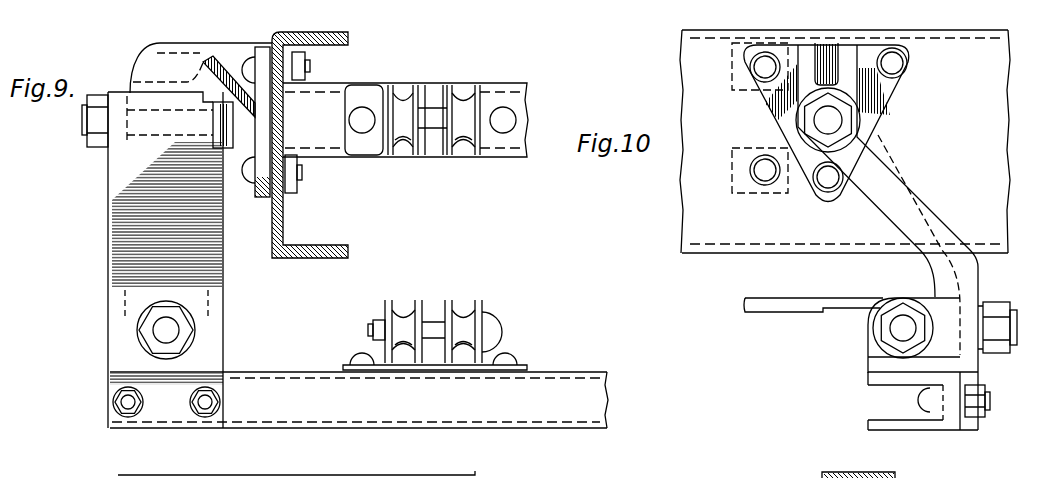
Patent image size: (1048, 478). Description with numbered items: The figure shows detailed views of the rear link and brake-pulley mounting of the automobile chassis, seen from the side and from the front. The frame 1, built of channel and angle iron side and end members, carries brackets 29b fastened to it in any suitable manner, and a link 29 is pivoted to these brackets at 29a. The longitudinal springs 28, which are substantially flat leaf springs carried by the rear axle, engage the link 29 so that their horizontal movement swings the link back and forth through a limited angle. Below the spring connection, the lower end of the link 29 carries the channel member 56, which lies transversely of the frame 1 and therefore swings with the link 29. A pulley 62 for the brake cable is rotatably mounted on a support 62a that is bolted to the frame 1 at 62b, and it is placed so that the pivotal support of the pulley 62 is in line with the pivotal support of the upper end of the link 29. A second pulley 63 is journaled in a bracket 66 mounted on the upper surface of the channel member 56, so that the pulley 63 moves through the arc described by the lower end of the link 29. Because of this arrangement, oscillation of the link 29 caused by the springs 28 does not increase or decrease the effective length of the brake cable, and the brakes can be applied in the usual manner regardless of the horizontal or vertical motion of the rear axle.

In FIG. 9, the frame 1 is at (282, 231).
In FIG. 10, the frame 1 is at (697, 192).
In FIG. 10, the longitudinal springs 28 is at (795, 317).
In FIG. 9, the links 29 is at (137, 211).
In FIG. 10, the links 29 is at (947, 268).
In FIG. 9, the pivot 29a is at (86, 128).
In FIG. 10, the pivot 29a is at (832, 118).
In FIG. 9, the brackets 29b is at (152, 47).
In FIG. 10, the brackets 29b is at (900, 98).
In FIG. 9, the channel member 56 is at (547, 408).
In FIG. 10, the channel member 56 is at (903, 423).
In FIG. 9, the pulley 62 is at (467, 103).
In FIG. 9, the support 62a is at (332, 137).
In FIG. 9, the bolt connection 62b is at (311, 66).
In FIG. 9, the pulley 63 is at (463, 315).
In FIG. 9, the bracket 66 is at (484, 354).
In FIG. 10, the bracket 66 is at (880, 350).